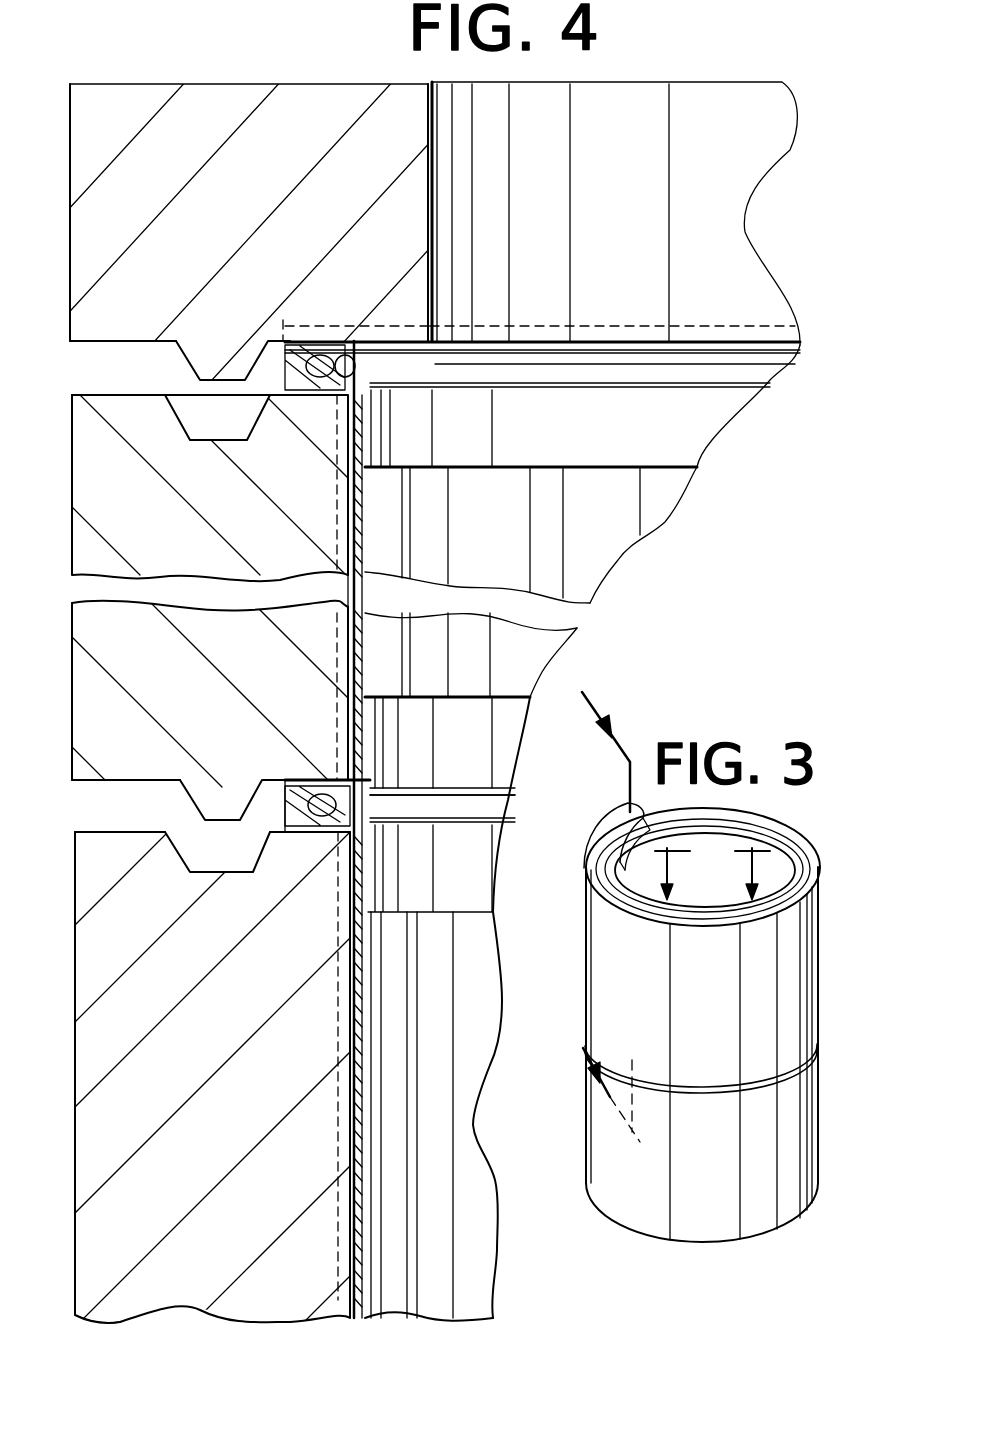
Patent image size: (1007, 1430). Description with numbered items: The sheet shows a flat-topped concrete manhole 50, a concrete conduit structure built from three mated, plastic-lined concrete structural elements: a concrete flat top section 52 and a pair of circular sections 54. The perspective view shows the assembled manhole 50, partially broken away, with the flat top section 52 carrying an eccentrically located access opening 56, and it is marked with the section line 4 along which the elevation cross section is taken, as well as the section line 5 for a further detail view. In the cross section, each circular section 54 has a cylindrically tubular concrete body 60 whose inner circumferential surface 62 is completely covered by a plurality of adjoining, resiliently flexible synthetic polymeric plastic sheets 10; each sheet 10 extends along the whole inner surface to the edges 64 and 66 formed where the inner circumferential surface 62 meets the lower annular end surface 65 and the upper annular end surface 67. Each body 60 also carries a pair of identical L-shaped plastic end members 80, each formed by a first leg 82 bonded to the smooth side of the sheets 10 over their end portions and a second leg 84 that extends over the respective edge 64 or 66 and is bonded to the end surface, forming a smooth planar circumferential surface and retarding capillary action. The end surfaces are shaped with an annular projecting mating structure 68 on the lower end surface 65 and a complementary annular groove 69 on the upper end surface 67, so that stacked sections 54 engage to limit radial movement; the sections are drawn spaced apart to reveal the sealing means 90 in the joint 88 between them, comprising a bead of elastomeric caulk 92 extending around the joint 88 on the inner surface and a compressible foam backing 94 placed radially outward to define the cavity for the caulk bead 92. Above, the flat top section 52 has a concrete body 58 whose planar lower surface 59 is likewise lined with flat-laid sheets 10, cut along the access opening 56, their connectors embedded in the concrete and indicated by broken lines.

In FIG. 4, the section line 4— 4 is at (596, 735).
In FIG. 3, the section line 4— 4 is at (601, 1085).
In FIG. 3, the section line 5— 5 is at (712, 874).
In FIG. 4, the synthetic polymeric plastic sheet 10 is at (488, 551).
In FIG. 4, the flat-topped concrete manhole 50 is at (631, 80).
In FIG. 3, the flat-topped concrete manhole 50 is at (656, 1248).
In FIG. 4, the concrete flat top section 52 is at (232, 78).
In FIG. 3, the concrete flat top section 52 is at (608, 813).
In FIG. 4, the circular section 54 is at (627, 572).
In FIG. 3, the circular section 54 is at (823, 947).
In FIG. 3, the access opening 56 is at (622, 843).
In FIG. 4, the concrete body of flat top 58 is at (102, 100).
In FIG. 4, the lower surface 59 is at (70, 343).
In FIG. 4, the cylindrically tubular concrete body 60 is at (93, 497).
In FIG. 4, the inner circumferential surface 62 is at (352, 622).
In FIG. 4, the edge of concrete body 64 is at (340, 763).
In FIG. 4, the lower annular end surface 65 is at (74, 780).
In FIG. 4, the edge of concrete body 66 is at (348, 410).
In FIG. 4, the upper annular end surface 67 is at (80, 395).
In FIG. 4, the annular projecting mating structure 68 is at (196, 792).
In FIG. 4, the annular groove 69 is at (234, 428).
In FIG. 4, the plastic end member 80 is at (430, 377).
In FIG. 4, the first leg 82 is at (366, 462).
In FIG. 4, the second leg 84 is at (311, 585).
In FIG. 4, the joint 88 is at (98, 802).
In FIG. 4, the sealing means 90 is at (797, 378).
In FIG. 4, the caulk bead 92 is at (373, 797).
In FIG. 4, the compressible backing 94 is at (305, 832).